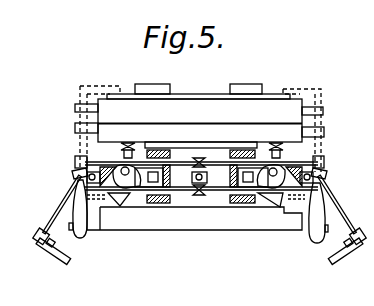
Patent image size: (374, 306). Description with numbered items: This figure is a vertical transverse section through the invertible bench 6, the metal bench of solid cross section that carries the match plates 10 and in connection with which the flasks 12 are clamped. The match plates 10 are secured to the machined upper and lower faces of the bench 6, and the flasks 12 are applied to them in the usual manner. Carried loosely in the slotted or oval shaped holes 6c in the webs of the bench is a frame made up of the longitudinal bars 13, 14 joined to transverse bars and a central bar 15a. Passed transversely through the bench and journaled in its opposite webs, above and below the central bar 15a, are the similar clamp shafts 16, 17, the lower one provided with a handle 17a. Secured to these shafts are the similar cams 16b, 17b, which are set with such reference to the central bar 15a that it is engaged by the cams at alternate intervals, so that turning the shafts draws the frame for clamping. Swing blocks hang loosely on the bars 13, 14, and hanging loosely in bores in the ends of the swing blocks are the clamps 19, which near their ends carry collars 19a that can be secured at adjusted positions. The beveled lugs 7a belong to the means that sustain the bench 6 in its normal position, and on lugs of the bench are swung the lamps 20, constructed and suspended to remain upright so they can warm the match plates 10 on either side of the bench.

The invertible bench 6 is at (140, 198).
The beveled lugs 7a is at (63, 127).
The match plate 10 is at (199, 120).
The flask 12 is at (198, 103).
The longitudinal bar 13 is at (325, 173).
The longitudinal bar 14 is at (76, 170).
The central bar 15a is at (207, 181).
The clamp shaft 16 is at (320, 144).
The cam 16b is at (185, 147).
The clamp shaft 17 is at (265, 190).
The handle 17a is at (314, 241).
The cam 17b is at (200, 195).
The clamp 19 is at (68, 198).
The collar 19a is at (41, 230).
The lamp 20 is at (123, 186).
The slotted hole 6c is at (222, 150).